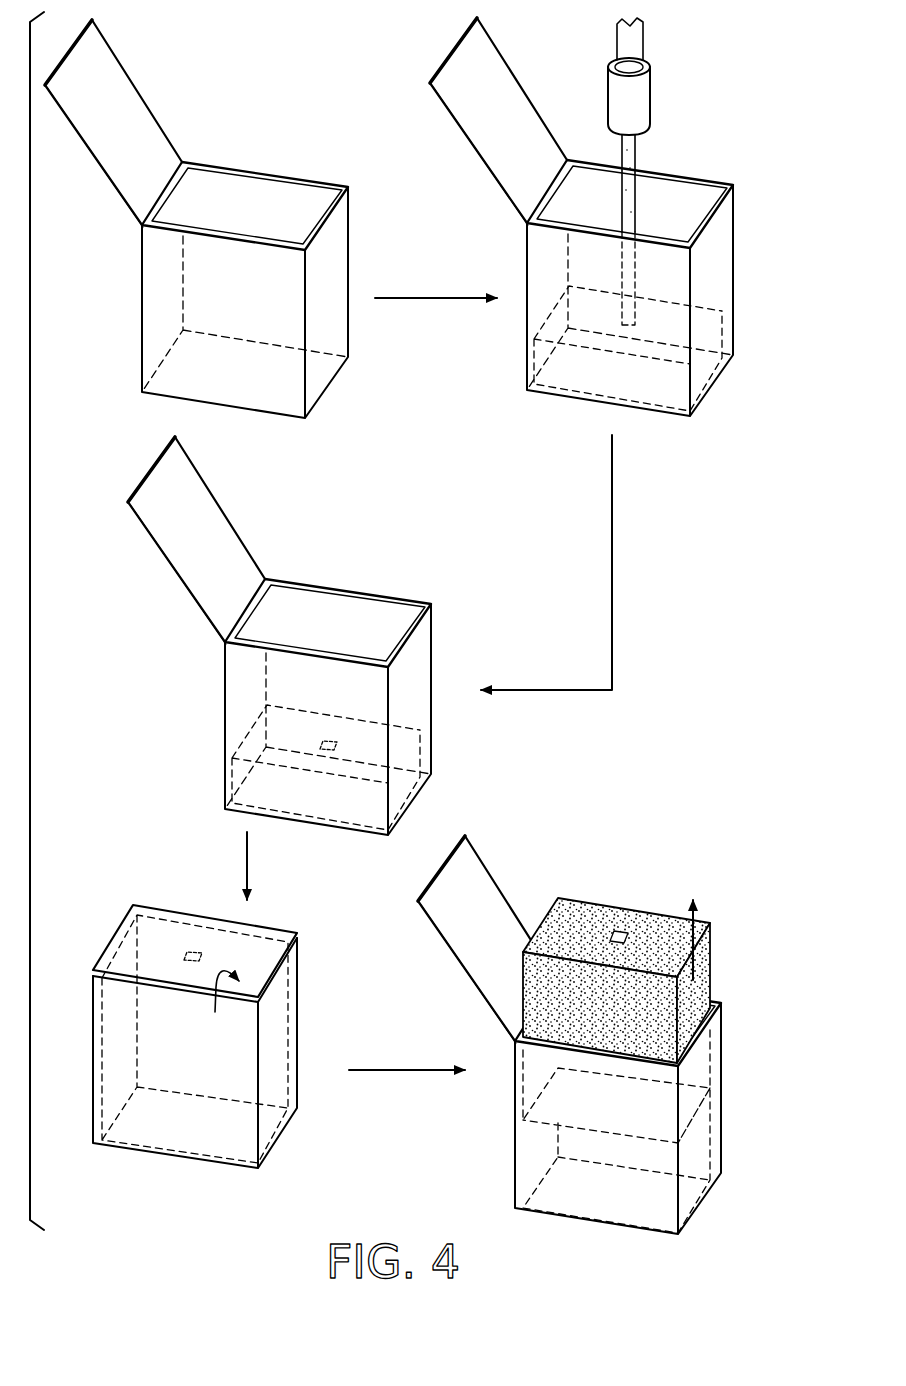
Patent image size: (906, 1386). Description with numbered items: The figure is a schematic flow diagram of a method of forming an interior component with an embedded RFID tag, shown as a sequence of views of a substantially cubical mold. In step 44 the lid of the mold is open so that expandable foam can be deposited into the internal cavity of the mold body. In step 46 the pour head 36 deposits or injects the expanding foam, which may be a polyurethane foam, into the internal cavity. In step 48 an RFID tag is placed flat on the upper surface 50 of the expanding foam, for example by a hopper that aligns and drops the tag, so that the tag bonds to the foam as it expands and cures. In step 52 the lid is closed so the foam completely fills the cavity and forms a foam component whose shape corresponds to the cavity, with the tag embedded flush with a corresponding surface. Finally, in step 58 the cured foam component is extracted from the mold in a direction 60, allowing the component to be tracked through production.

The pour head 36 is at (652, 93).
The step 44 is at (198, 138).
The step 46 is at (586, 141).
The step 48 is at (283, 561).
The upper surface 50 is at (406, 725).
The step 52 is at (158, 891).
The step 58 is at (673, 902).
The direction 60 is at (700, 970).